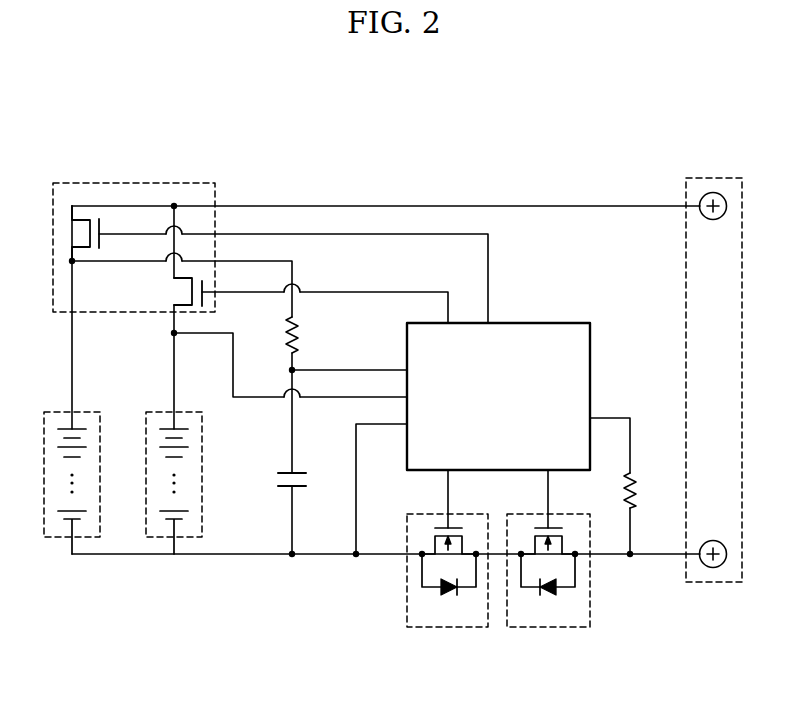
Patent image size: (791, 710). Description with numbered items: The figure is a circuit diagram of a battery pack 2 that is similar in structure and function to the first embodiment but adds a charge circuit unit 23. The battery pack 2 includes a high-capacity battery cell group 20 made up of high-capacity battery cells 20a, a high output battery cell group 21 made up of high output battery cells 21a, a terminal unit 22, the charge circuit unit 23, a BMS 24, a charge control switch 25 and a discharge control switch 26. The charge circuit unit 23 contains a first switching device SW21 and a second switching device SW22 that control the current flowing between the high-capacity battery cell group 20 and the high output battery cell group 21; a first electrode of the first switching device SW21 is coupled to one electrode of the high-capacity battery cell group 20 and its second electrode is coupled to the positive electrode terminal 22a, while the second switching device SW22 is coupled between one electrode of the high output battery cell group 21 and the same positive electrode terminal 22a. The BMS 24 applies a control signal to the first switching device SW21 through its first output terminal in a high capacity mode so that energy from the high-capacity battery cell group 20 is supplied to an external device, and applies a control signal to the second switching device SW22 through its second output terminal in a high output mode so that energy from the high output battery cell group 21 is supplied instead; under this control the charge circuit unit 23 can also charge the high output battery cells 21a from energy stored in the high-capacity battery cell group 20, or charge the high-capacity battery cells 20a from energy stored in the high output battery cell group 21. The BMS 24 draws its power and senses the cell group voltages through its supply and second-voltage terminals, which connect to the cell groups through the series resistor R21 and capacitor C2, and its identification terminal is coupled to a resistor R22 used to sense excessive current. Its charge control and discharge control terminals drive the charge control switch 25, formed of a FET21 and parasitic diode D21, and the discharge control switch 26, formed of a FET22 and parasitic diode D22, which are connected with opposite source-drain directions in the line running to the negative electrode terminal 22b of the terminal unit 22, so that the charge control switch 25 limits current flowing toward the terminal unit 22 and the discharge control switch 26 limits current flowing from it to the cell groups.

The battery pack 2 is at (470, 162).
The high-capacity battery cell group 20 is at (62, 540).
The high-capacity battery cells 20a is at (64, 428).
The high output battery cell group 21 is at (164, 540).
The high output battery cells 21a is at (166, 428).
The terminal unit 22 is at (686, 191).
The positive electrode terminal 22a is at (713, 191).
The negative external terminal 22b is at (713, 568).
The charge circuit unit 23 is at (180, 182).
The BMS 24 is at (548, 321).
The charge control switch 25 is at (548, 628).
The discharge control switch 26 is at (448, 628).
The first switching device SW21 is at (96, 218).
The second switching device SW22 is at (197, 275).
The first resistor R21 is at (312, 335).
The second resistor R22 is at (650, 490).
The capacitor C2 is at (307, 484).
The charge FET FET21 is at (540, 522).
The discharge FET FET22 is at (440, 522).
The charge FET parasitic diode D21 is at (548, 589).
The discharge FET parasitic diode D22 is at (449, 589).